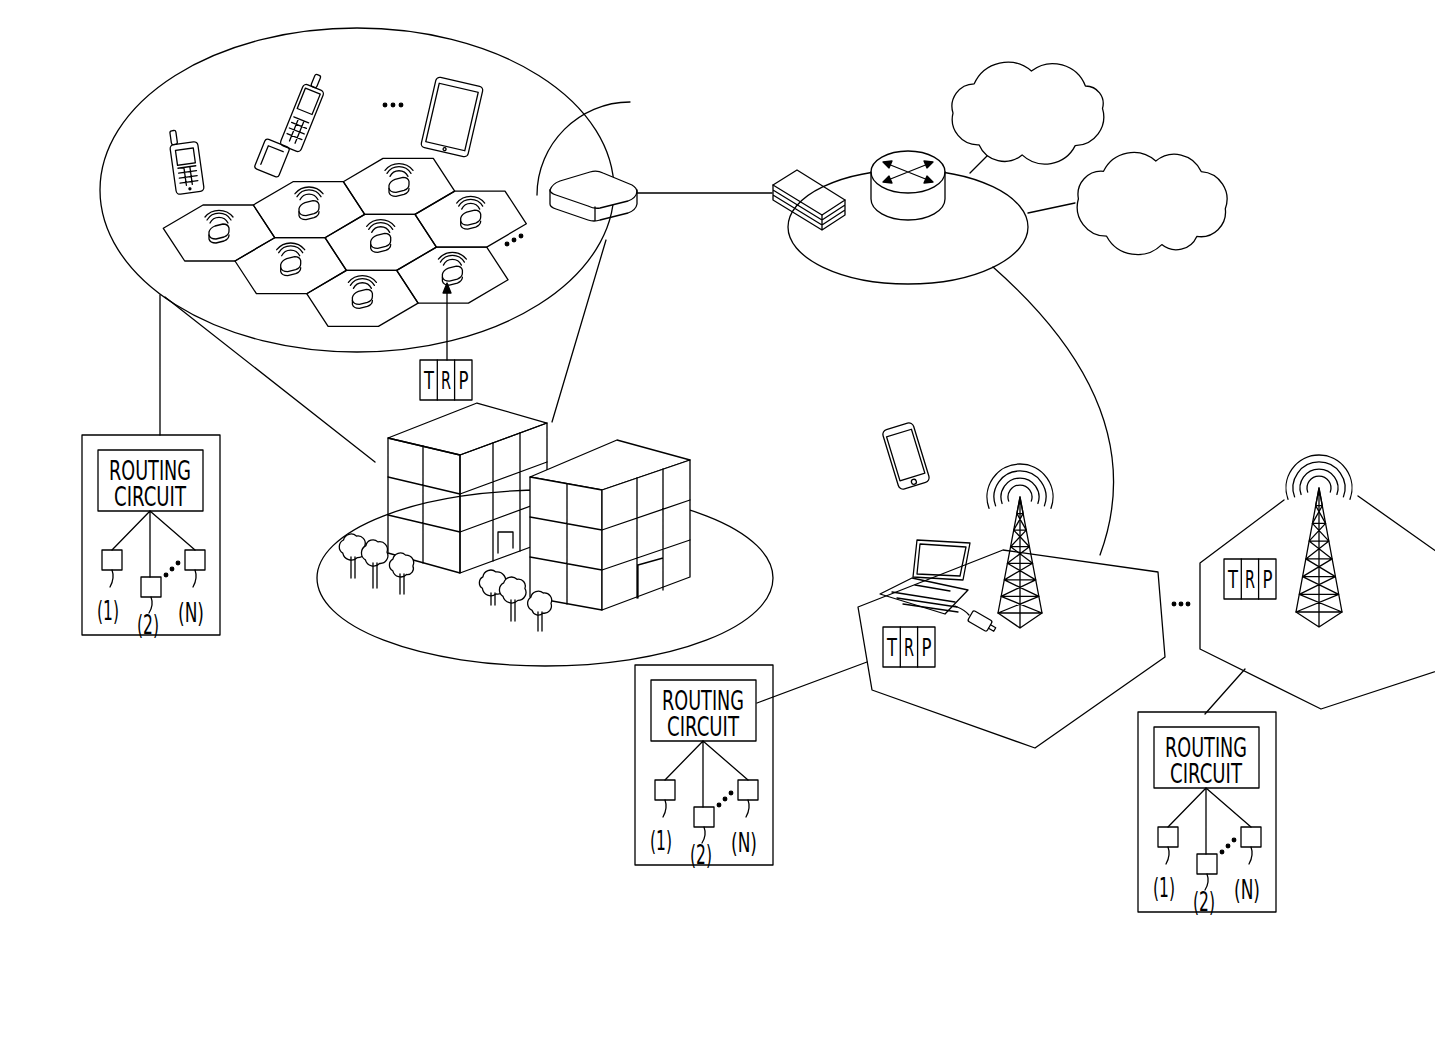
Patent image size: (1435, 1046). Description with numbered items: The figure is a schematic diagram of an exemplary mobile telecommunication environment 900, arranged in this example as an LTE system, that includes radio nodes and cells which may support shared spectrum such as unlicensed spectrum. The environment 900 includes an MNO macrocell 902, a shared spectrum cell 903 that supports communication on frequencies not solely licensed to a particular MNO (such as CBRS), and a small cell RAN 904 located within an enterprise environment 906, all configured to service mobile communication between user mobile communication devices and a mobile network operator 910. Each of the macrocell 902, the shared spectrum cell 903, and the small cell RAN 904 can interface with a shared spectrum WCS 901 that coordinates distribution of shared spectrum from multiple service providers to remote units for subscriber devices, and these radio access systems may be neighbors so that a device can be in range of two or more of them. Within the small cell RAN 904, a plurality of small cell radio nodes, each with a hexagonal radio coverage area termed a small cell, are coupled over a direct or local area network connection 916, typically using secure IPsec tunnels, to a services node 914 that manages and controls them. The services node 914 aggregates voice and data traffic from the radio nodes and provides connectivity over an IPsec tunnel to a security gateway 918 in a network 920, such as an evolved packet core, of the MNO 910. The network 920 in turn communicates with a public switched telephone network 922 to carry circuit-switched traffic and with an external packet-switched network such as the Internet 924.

The mobile telecommunication environment 900 is at (687, 65).
The shared spectrum WCS 901 is at (167, 642).
The macrocell 902 is at (954, 728).
The shared spectrum cell 903 is at (1317, 582).
The small cell RAN 904 is at (387, 208).
The enterprise environment 906 is at (318, 567).
The mobile network operator (MNO) 910 is at (905, 200).
The services node 914 is at (625, 173).
The local area network (LAN) connection 916 is at (602, 141).
The security gateway (SeGW) 918 is at (797, 168).
The network 920 is at (882, 283).
The public switched telephone network (PSTN) 922 is at (1170, 157).
The Internet 924 is at (995, 63).